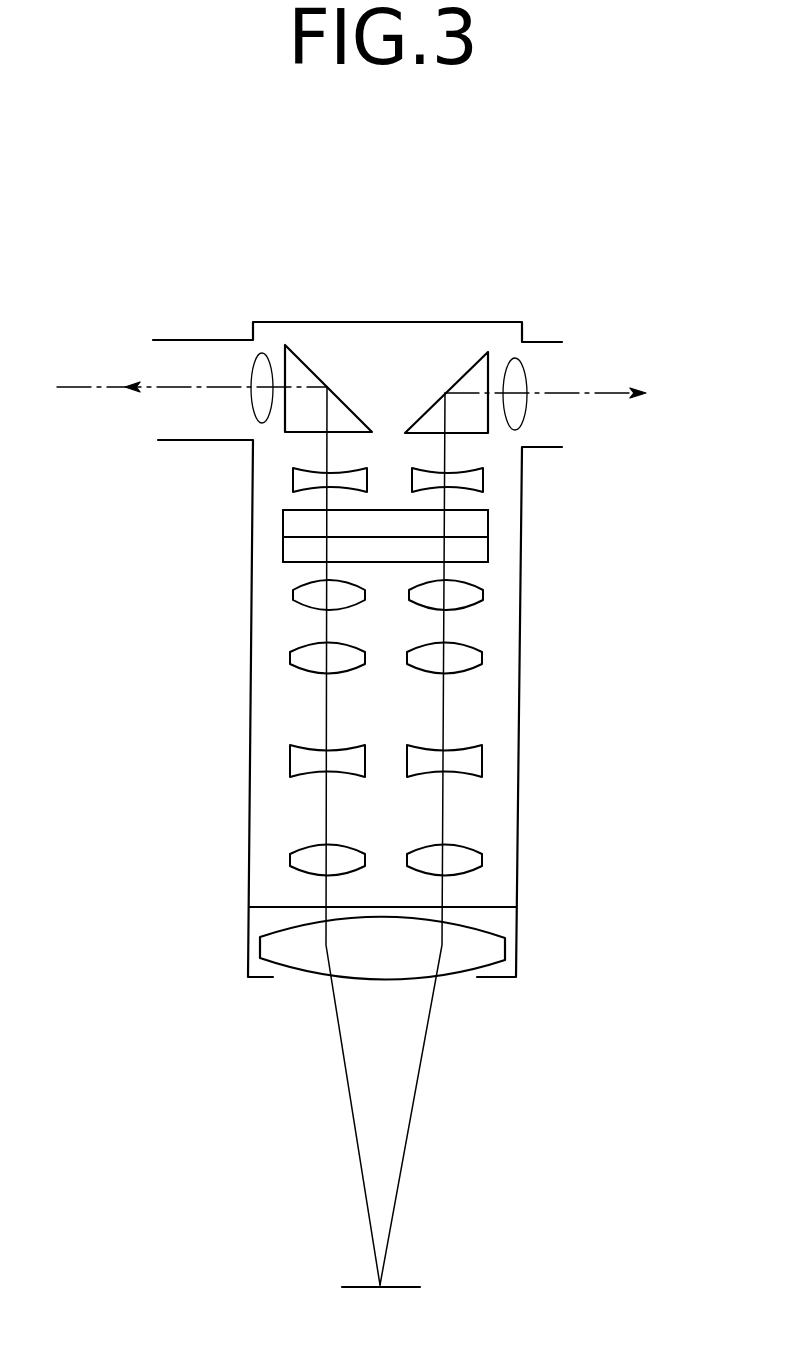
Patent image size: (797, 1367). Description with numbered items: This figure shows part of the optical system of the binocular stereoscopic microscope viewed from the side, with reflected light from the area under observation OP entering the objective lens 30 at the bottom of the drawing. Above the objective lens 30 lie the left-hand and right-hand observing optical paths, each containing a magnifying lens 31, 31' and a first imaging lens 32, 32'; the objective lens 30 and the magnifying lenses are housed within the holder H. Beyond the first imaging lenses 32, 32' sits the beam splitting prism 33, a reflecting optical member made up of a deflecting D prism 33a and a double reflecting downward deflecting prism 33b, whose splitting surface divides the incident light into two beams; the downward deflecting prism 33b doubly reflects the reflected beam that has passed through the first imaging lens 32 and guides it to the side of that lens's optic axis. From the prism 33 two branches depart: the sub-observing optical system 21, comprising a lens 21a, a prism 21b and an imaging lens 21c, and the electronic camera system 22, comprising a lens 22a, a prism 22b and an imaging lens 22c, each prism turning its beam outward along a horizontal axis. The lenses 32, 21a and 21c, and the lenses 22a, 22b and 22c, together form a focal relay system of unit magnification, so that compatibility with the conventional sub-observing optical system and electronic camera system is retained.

The sub-observing optical system 21 is at (73, 413).
The lens 21a is at (293, 478).
The prism 21b is at (312, 366).
The imaging lens 21c is at (255, 355).
The electronic camera system 22 is at (639, 390).
The lens 22a is at (485, 480).
The prism 22b is at (473, 366).
The imaging lens 22c is at (521, 357).
The objective lens 30 is at (290, 968).
The magnifying lens 31 is at (277, 758).
The magnifying lens 31' is at (497, 761).
The first imaging lens 32 is at (272, 593).
The first imaging lens 32' is at (509, 598).
The beam splitting prism 33 is at (643, 505).
The D prism 33a is at (490, 518).
The double reflecting downward deflecting prism 33b is at (490, 550).
The holder H is at (518, 858).
The area under observation OP is at (395, 1283).